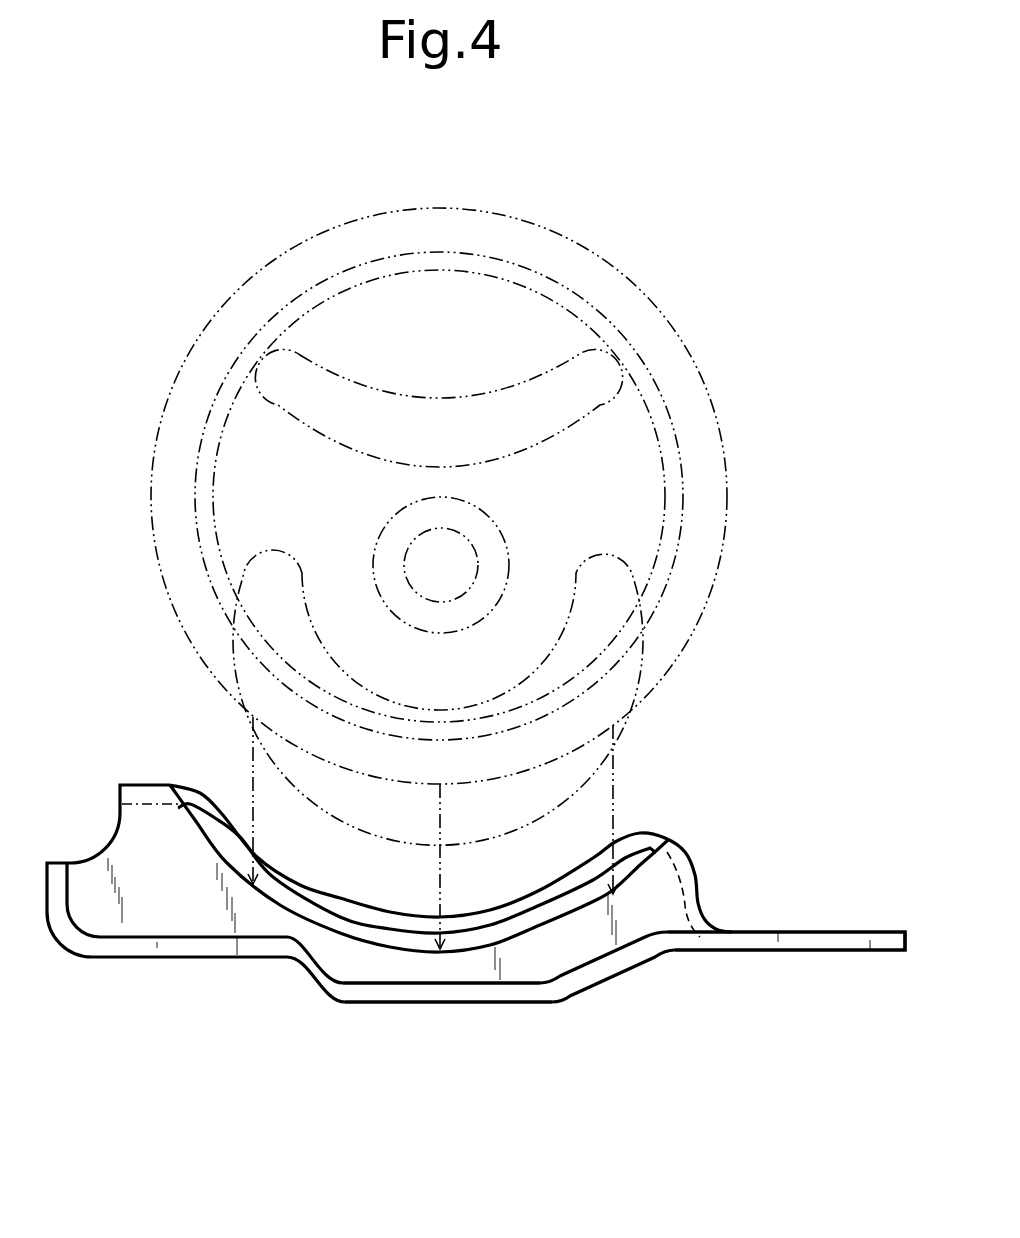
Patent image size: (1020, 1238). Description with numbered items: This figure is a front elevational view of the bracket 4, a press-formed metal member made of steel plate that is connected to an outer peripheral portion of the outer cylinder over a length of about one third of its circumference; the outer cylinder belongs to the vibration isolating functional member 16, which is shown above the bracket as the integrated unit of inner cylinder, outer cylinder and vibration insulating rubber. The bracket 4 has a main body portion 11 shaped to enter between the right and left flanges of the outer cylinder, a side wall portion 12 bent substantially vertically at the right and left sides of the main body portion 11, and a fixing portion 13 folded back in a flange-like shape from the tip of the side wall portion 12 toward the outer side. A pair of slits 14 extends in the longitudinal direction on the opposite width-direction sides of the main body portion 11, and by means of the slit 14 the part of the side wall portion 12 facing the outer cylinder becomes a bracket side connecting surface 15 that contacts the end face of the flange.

The bracket 4 is at (280, 973).
The main body portion 11 is at (520, 903).
The side wall portion 12 is at (433, 970).
The fixing portion 13 is at (685, 942).
The slit 14 is at (355, 930).
The bracket side connecting surface 15 is at (282, 905).
The vibration isolating functional member 16 is at (240, 262).